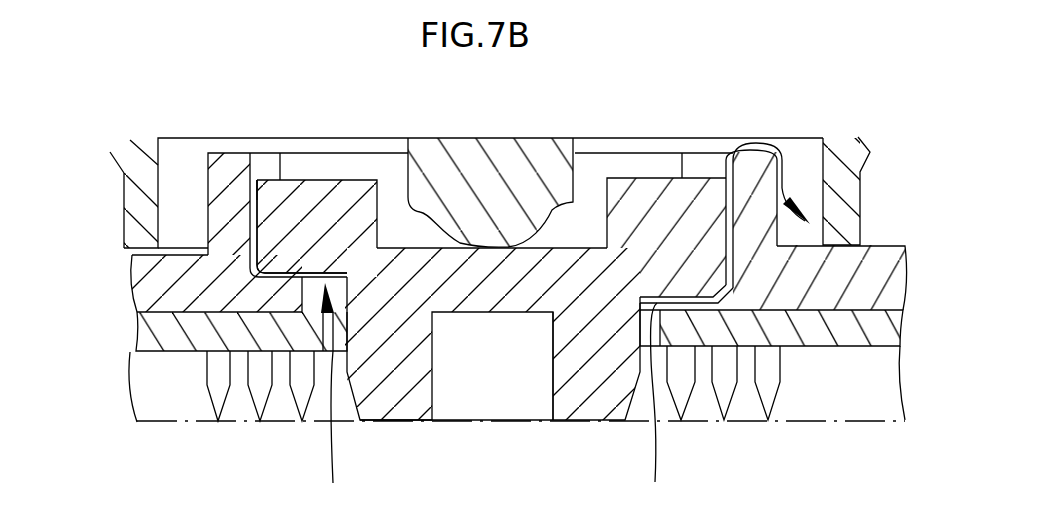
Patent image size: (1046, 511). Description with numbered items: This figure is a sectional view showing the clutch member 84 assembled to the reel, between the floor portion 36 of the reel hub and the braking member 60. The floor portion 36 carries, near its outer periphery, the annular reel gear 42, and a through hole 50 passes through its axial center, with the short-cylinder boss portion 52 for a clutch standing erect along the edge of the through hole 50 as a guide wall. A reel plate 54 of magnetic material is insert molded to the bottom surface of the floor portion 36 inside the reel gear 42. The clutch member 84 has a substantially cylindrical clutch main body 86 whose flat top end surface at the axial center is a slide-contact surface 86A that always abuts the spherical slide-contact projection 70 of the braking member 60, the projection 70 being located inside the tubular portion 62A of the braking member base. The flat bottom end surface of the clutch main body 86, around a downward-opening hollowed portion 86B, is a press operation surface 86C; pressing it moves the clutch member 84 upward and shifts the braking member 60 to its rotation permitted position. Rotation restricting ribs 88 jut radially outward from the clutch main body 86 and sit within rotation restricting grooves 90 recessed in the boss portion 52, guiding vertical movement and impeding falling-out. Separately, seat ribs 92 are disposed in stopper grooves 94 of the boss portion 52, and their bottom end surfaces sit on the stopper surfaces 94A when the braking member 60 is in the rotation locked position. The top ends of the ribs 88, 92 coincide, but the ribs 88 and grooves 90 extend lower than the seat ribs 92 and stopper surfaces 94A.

The braking member 60 is at (147, 138).
The boss portion for a clutch 52 is at (220, 191).
The seat ribs 92 is at (265, 176).
The stopper grooves 94 is at (268, 166).
The stopper surfaces 94A is at (288, 277).
The tubular portion 62A is at (138, 233).
The clutch member 84 is at (354, 176).
The slide-contact projection 70 is at (478, 157).
The rotation restricting ribs 88 is at (656, 200).
The rotation restricting grooves 90 is at (710, 168).
The floor portion 36 is at (820, 268).
The reel plate 54 is at (147, 333).
The clutch main body 86 is at (378, 343).
The slide-contact surface 86A is at (418, 247).
The hollowed portion 86B is at (553, 392).
The press operation surface 86C is at (407, 422).
The reel gear 42 is at (218, 395).
The through hole 50 is at (318, 313).